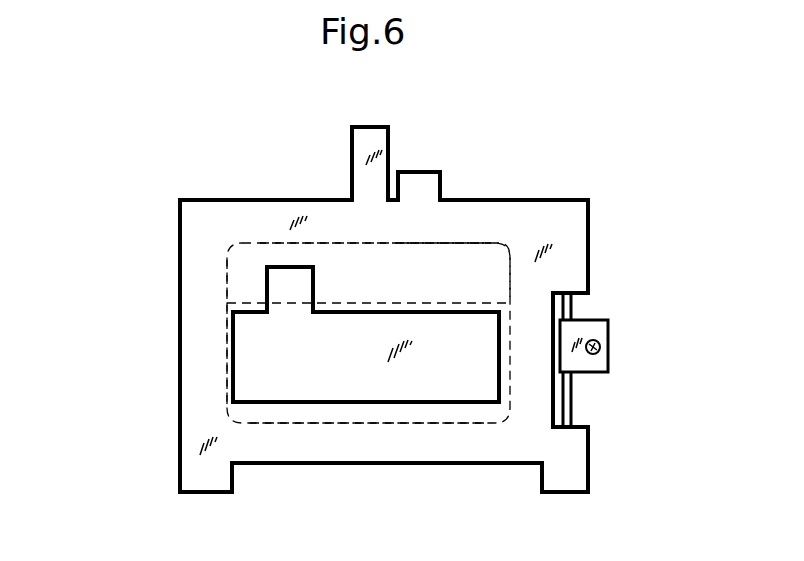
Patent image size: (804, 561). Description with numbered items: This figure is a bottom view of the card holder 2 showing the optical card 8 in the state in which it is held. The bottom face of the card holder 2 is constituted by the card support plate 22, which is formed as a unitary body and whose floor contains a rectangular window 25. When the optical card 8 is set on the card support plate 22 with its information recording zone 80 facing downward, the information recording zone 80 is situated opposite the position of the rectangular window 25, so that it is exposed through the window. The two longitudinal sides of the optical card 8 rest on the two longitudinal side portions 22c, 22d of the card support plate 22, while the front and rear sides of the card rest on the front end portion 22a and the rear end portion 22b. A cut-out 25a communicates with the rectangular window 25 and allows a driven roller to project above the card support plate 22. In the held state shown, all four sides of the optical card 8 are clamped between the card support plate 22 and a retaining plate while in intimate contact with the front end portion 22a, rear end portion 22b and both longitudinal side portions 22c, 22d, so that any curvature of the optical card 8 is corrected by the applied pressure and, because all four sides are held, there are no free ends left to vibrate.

The card holder 2 is at (545, 187).
The card support plate 22 is at (368, 333).
The front end portion 22a is at (232, 357).
The rear end portion 22b is at (508, 345).
The longitudinal side portion 22c is at (391, 408).
The longitudinal side portion 22d is at (350, 283).
The rectangular window 25 is at (264, 394).
The cut-out 25a is at (277, 267).
The optical card 8 is at (447, 243).
The information recording zone 80 is at (360, 383).